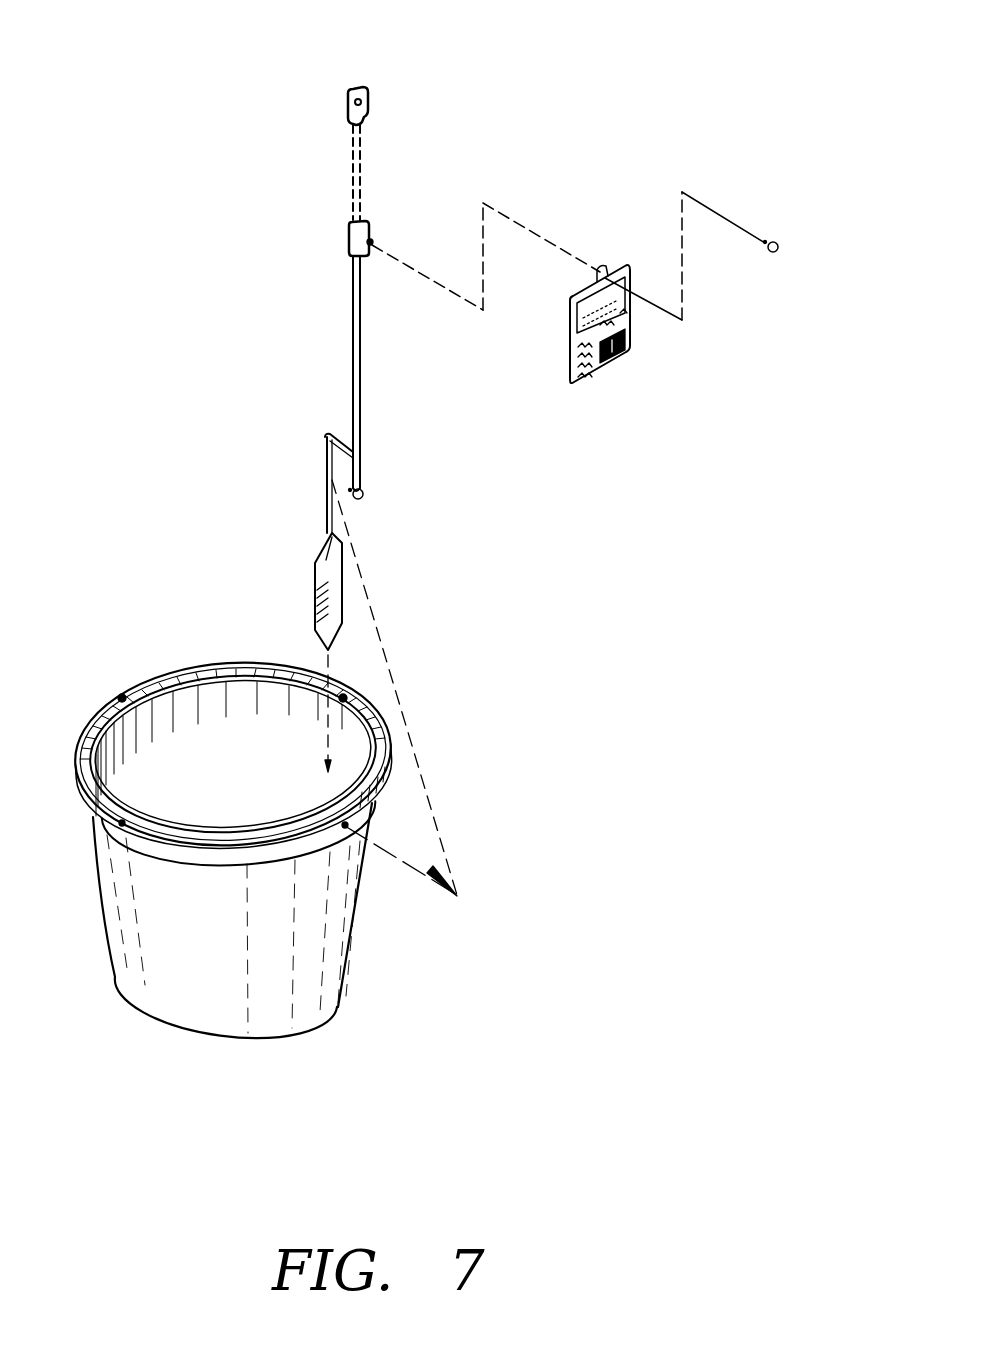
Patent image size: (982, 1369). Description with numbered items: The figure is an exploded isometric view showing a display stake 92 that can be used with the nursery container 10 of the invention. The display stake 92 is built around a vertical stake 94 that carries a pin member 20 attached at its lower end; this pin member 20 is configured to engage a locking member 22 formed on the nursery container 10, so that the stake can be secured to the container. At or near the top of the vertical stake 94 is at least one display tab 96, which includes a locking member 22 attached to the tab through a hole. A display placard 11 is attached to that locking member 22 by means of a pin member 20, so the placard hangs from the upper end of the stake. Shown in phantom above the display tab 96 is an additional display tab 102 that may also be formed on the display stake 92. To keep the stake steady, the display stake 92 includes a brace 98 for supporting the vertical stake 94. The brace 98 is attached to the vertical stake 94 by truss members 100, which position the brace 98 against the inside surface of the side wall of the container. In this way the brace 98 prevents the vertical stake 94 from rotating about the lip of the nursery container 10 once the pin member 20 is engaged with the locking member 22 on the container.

The nursery container 10 is at (378, 968).
The display placard 11 is at (633, 318).
The pin member 20 is at (362, 497).
The locking member 22 is at (370, 238).
The display stake 92 is at (362, 395).
The vertical stake 94 is at (352, 303).
The display tab 96 is at (350, 250).
The brace 98 is at (320, 575).
The truss members 100 is at (340, 437).
The additional display tab 102 is at (400, 77).